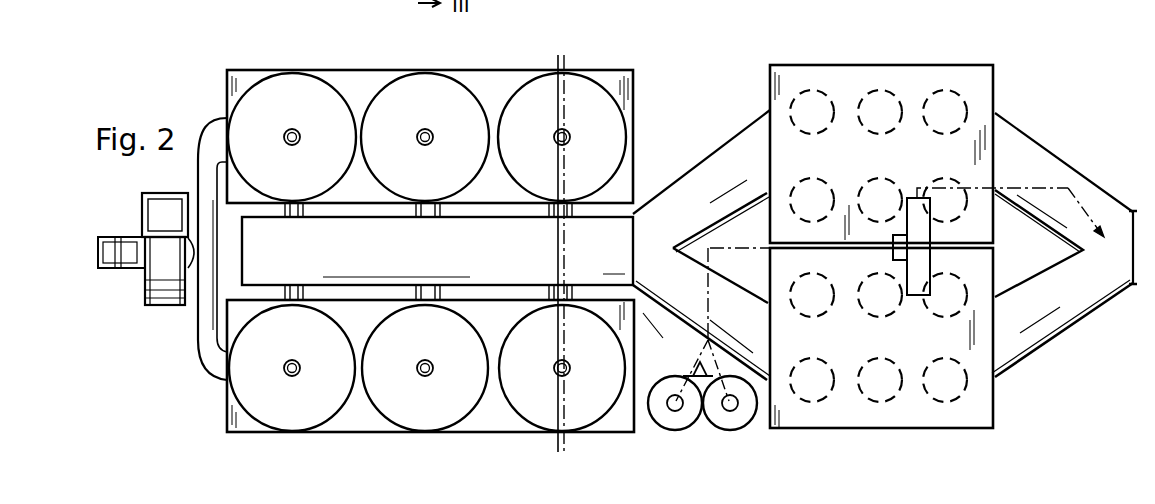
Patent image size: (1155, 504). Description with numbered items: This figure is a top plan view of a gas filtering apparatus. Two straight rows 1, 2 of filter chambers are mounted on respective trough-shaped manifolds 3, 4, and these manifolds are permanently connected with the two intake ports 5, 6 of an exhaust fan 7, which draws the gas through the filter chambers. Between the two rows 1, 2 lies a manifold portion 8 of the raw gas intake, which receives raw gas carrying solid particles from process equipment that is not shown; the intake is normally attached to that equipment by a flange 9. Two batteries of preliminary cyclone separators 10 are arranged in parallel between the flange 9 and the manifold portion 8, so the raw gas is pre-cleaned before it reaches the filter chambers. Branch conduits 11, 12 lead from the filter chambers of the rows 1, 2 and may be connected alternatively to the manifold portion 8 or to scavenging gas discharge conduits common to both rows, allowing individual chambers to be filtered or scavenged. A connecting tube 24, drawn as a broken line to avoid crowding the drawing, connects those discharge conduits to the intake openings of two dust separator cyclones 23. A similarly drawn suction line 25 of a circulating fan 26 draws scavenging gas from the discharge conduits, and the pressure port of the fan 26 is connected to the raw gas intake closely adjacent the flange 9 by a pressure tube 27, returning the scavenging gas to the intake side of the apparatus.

The row of filter chambers 1 is at (341, 96).
The row of filter chambers 2 is at (331, 416).
The trough-shaped manifold 3 is at (488, 97).
The trough-shaped manifold 4 is at (487, 414).
The intake port 5 is at (227, 118).
The intake port 6 is at (227, 383).
The exhaust fan 7 is at (163, 303).
The manifold portion of raw gas intake 8 is at (620, 262).
The flange 9 is at (1134, 210).
The preliminary cyclone separators 10 is at (904, 90).
The branch conduit 11 is at (291, 217).
The branch conduit 12 is at (292, 288).
The dust separator cyclones 23 is at (675, 420).
The connecting tube 24 is at (700, 347).
The suction line 25 is at (702, 334).
The circulating fan 26 is at (912, 296).
The pressure tube 27 is at (1080, 198).